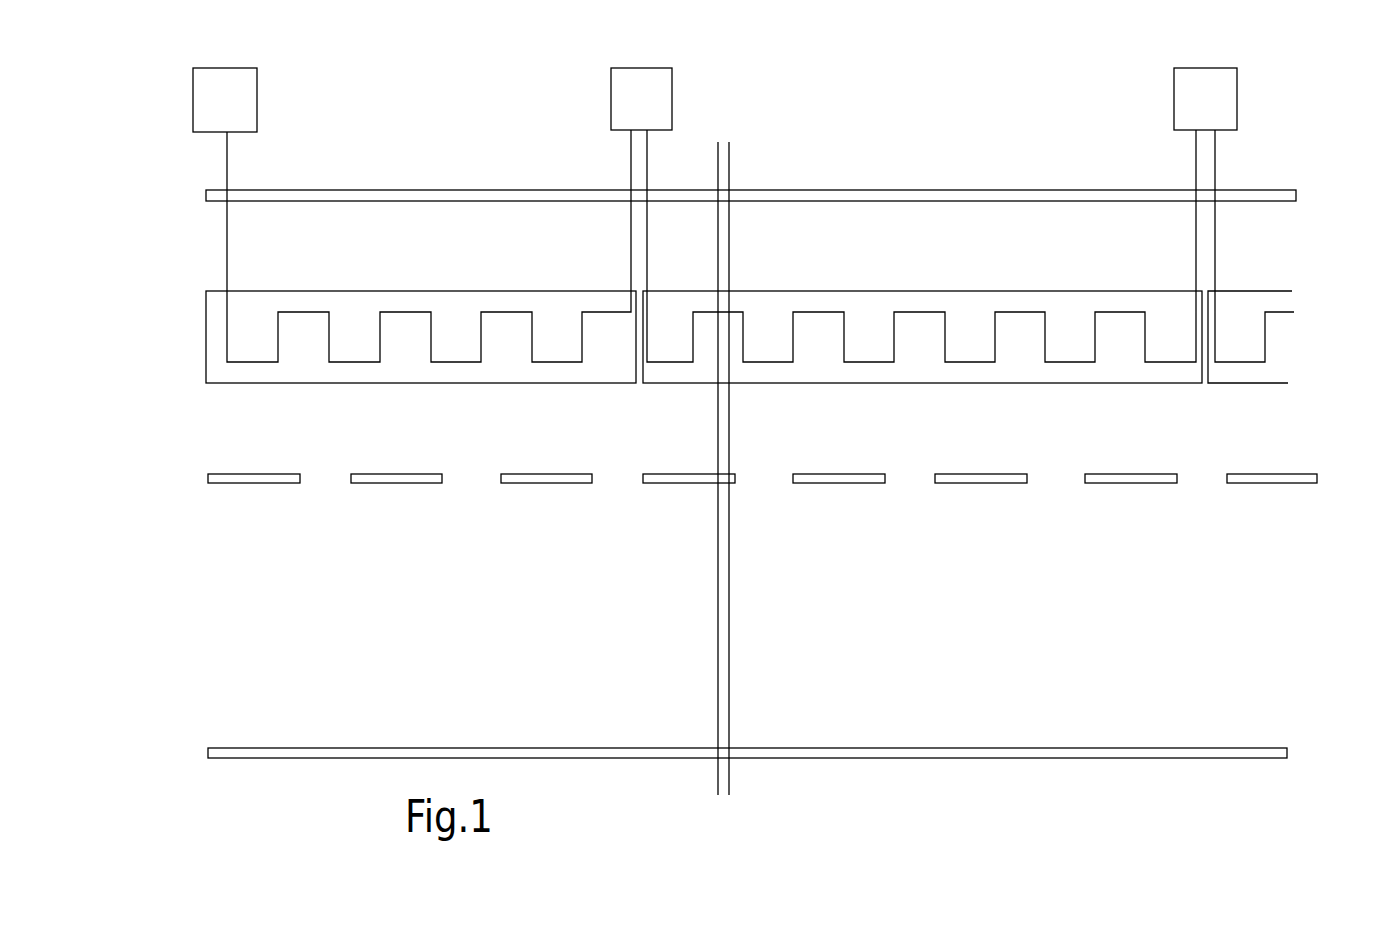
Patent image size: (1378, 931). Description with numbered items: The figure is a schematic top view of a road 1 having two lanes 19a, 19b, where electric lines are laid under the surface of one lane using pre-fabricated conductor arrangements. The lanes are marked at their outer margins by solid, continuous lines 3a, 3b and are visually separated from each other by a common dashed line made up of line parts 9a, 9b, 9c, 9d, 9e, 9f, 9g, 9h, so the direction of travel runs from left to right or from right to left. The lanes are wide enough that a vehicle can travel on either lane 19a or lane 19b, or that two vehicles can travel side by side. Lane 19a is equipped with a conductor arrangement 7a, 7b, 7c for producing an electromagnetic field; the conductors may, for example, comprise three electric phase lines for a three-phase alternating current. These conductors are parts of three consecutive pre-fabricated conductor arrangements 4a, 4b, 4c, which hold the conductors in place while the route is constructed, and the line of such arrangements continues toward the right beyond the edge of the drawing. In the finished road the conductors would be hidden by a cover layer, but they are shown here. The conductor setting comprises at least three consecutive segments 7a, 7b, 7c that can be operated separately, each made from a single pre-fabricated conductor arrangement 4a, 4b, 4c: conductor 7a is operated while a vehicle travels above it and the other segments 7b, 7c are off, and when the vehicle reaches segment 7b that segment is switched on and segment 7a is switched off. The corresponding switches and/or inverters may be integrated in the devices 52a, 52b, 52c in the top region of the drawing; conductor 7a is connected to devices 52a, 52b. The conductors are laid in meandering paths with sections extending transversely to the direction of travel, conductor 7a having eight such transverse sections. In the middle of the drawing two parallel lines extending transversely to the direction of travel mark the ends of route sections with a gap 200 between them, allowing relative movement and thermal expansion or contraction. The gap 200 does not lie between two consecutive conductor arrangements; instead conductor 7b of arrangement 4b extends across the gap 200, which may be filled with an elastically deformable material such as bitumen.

The road 1 is at (338, 642).
The solid continuous line 3a is at (895, 758).
The solid continuous line 3b is at (912, 189).
The pre-fabricated conductor arrangement 4a is at (435, 290).
The pre-fabricated conductor arrangement 4b is at (962, 290).
The pre-fabricated conductor arrangement 4c is at (1270, 292).
The conductor 7a is at (226, 236).
The conductor 7b is at (648, 255).
The conductor 7c is at (1216, 242).
The line part 9a is at (243, 483).
The line part 9b is at (386, 483).
The line part 9c is at (536, 483).
The line part 9d is at (656, 483).
The line part 9e is at (818, 483).
The line part 9f is at (968, 483).
The line part 9g is at (1115, 483).
The line part 9h is at (1252, 483).
The lane 19a is at (1290, 414).
The lane 19b is at (1262, 592).
The device 52a is at (257, 100).
The device 52b is at (672, 97).
The device 52c is at (1174, 97).
The gap 200 is at (729, 608).